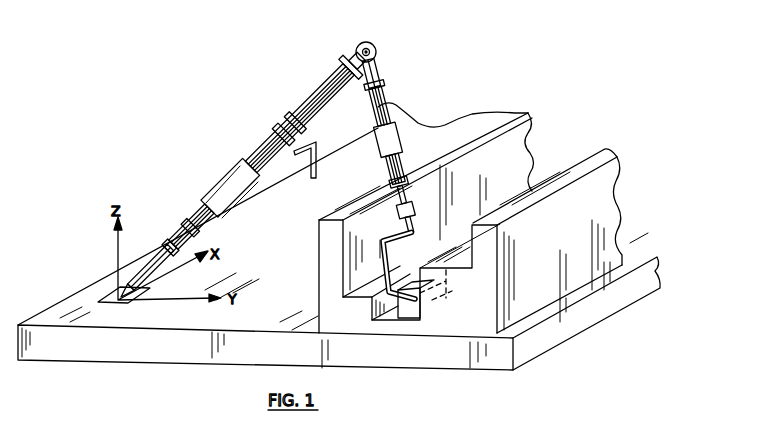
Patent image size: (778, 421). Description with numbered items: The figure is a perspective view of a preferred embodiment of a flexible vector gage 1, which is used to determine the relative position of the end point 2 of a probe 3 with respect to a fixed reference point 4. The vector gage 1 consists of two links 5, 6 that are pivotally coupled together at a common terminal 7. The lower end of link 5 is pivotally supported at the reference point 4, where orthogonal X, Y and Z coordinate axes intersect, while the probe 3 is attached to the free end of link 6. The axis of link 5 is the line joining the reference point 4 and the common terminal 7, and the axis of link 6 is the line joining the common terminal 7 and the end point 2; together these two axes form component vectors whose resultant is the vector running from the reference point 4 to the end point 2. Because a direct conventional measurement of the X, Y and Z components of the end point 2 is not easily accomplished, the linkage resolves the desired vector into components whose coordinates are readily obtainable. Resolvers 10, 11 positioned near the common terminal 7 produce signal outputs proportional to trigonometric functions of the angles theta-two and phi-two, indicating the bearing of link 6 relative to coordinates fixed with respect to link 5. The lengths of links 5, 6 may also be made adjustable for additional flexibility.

The vector gage 1 is at (259, 156).
The end point 2 is at (447, 289).
The probe 3 is at (420, 302).
The reference point 4 is at (102, 296).
The link 5 is at (228, 178).
The link 6 is at (401, 138).
The common terminal 7 is at (369, 52).
The resolver 10 is at (345, 60).
The resolver 11 is at (358, 44).